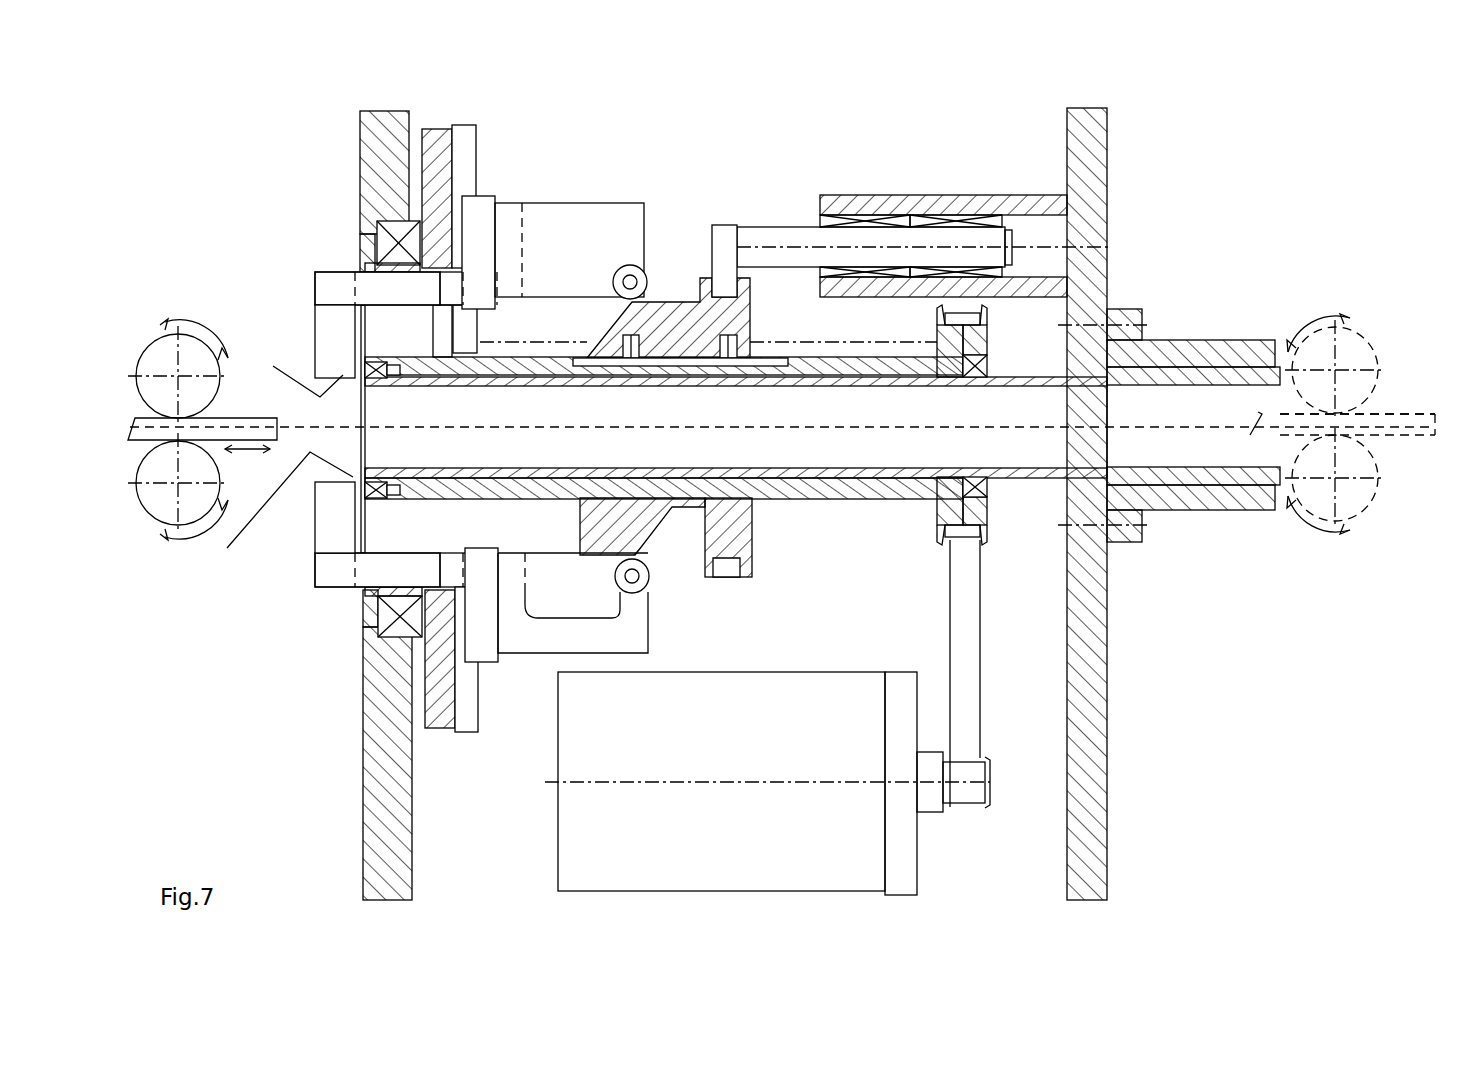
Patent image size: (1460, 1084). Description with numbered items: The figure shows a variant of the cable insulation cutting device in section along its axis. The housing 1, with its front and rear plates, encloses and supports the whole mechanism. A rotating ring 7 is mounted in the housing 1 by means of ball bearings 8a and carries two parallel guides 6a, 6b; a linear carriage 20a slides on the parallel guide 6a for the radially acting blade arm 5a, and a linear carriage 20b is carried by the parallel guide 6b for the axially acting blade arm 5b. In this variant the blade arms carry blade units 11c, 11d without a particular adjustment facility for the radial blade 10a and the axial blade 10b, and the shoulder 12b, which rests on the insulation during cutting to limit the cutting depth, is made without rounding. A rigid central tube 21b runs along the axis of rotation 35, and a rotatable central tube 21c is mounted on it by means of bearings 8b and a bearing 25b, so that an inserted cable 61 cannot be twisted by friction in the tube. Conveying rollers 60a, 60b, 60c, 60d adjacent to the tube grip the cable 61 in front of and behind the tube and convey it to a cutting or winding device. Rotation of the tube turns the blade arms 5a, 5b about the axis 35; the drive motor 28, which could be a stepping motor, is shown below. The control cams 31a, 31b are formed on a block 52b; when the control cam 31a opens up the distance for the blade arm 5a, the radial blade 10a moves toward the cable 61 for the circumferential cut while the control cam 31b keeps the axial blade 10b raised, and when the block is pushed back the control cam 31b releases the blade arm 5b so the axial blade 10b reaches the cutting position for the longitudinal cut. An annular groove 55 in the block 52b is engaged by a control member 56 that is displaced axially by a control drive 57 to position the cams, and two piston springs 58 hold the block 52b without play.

The housing 1 is at (380, 717).
The blade arm 5a is at (367, 290).
The blade arm 5b is at (365, 572).
The parallel guide 6a is at (465, 138).
The parallel guide 6b is at (437, 728).
The rotating ring 7 is at (437, 152).
The ball bearings 8a is at (402, 625).
The bearings 8b is at (380, 378).
The radial blade 10a is at (313, 380).
The axial blade 10b is at (352, 482).
The blade unit 11c is at (334, 325).
The blade unit 11d is at (316, 549).
The shoulder 12b is at (271, 465).
The linear carriage 20a is at (483, 207).
The linear carriage 20b is at (470, 732).
The rigid central tube 21b is at (705, 472).
The rotatable central tube 21c is at (802, 485).
The bearing 25b is at (975, 363).
The drive motor 28 is at (767, 783).
The control cam 31a is at (615, 318).
The control cam 31b is at (655, 535).
The axis of rotation 35 is at (525, 427).
The block 52b is at (668, 307).
The annular groove 55 is at (728, 565).
The control member 56 is at (725, 232).
The control drive 57 is at (865, 200).
The piston springs 58 is at (708, 328).
The conveying roller 60a is at (162, 352).
The conveying roller 60b is at (170, 512).
The conveying roller 60c is at (1350, 342).
The conveying roller 60d is at (1350, 510).
The cable 61 is at (150, 425).